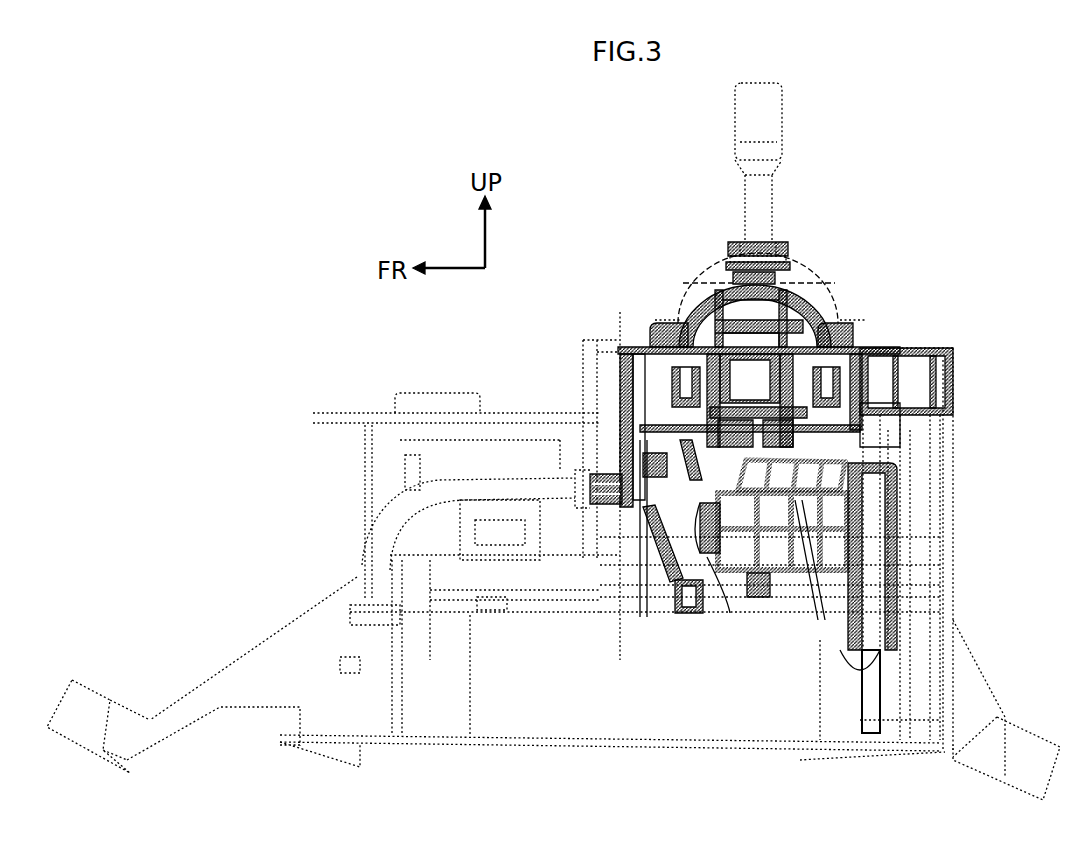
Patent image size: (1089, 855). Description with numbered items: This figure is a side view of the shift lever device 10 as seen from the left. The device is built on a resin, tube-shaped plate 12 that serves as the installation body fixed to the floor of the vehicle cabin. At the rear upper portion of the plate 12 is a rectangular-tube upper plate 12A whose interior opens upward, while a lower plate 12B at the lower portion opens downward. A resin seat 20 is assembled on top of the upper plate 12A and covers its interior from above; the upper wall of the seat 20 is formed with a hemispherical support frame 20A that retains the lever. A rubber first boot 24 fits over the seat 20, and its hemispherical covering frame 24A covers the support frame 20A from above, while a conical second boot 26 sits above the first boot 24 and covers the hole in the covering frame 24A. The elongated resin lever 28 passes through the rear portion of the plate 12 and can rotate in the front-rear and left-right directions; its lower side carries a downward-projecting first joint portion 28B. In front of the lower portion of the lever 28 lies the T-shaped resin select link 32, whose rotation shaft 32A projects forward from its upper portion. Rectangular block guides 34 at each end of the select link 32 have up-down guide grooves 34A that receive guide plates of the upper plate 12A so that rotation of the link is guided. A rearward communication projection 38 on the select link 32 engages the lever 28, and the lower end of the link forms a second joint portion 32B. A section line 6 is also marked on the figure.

The shift lever device 10 is at (552, 210).
The plate 12 is at (960, 450).
The upper plate 12A is at (960, 520).
The lower plate 12B is at (527, 740).
The seat 20 is at (912, 358).
The support frame 20A is at (682, 305).
The first boot 24 is at (590, 342).
The covering frame 24A is at (832, 300).
The second boot 26 is at (713, 265).
The lever 28 is at (785, 133).
The first joint portion 28B is at (762, 600).
The select link 32 is at (618, 468).
The rotation shaft 32A is at (602, 565).
The second joint portion 32B is at (700, 612).
The guide 34 is at (622, 402).
The guide groove 34A is at (640, 570).
The communication projection 38 is at (718, 555).
The section line 6 is at (618, 648).